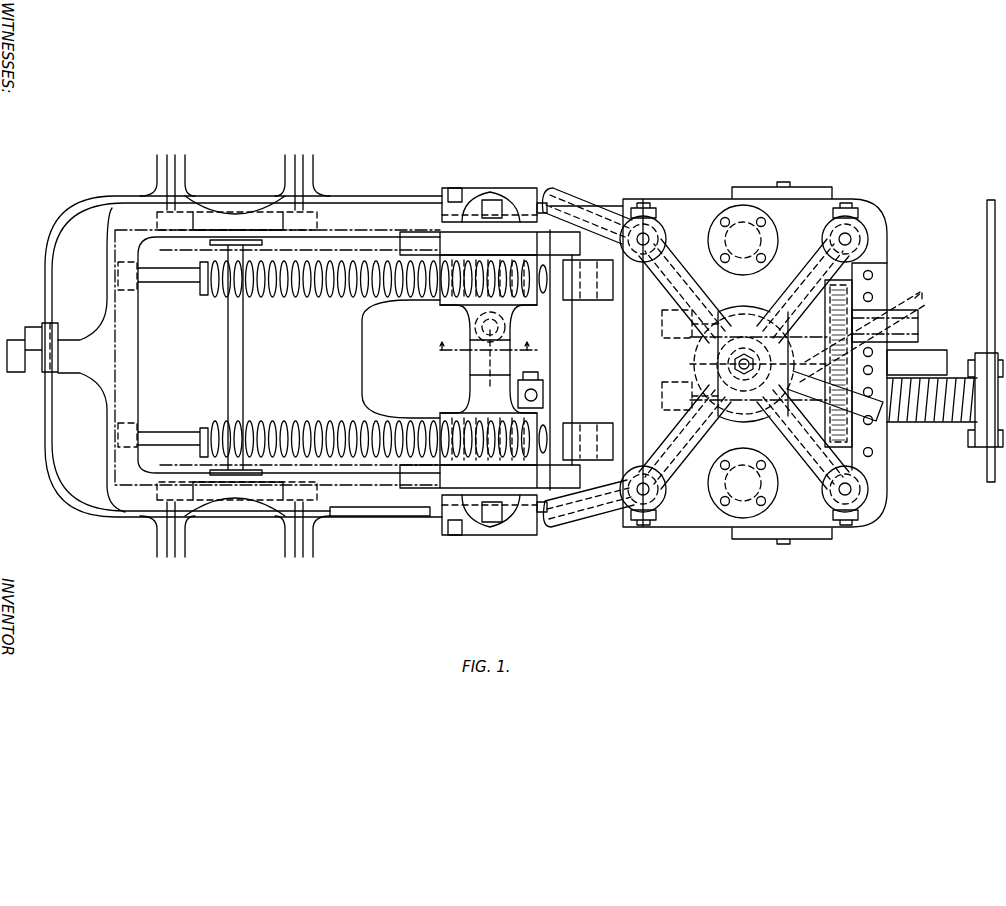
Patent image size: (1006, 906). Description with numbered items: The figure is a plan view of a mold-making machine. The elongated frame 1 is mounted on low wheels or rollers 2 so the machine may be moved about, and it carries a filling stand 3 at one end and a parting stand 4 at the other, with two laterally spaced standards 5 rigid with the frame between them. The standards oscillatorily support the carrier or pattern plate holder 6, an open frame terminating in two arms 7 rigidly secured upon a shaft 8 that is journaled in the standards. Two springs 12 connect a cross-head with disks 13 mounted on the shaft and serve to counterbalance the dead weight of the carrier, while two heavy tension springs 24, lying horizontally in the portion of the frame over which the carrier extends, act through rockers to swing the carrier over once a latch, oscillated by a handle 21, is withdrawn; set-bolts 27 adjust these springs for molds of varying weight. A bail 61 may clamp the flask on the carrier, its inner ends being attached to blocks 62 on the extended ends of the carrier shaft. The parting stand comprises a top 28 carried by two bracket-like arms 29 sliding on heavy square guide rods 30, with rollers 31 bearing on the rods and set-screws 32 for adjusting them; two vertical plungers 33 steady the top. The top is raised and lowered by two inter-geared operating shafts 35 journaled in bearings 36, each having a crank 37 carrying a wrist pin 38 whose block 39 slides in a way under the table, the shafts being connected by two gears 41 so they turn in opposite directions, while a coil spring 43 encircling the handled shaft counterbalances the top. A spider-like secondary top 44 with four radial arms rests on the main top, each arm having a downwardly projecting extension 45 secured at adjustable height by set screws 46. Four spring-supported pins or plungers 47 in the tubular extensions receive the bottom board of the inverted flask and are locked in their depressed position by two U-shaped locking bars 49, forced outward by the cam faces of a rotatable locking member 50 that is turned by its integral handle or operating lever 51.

The frame 1 is at (413, 238).
The wheels or rollers 2 is at (192, 212).
The filling stand 3 is at (218, 243).
The parting stand 4 is at (889, 359).
The standards 5 is at (465, 245).
The carrier or pattern plate holder 6 is at (332, 210).
The arms 7 is at (450, 253).
The shaft 8 is at (473, 360).
The springs 12 is at (473, 327).
The disks 13 is at (453, 298).
The handle 21 is at (395, 507).
The tension springs 24 is at (297, 300).
The set-bolts 27 is at (120, 287).
The top 28 is at (798, 230).
The bracket-like arms 29 is at (587, 200).
The guide rods 30 is at (492, 200).
The rollers 31 is at (522, 207).
The set-screws 32 is at (543, 210).
The vertical plungers 33 is at (743, 240).
The operating shafts 35 is at (893, 312).
The bearings 36 is at (855, 305).
The crank 37 is at (685, 367).
The wrist pin 38 is at (662, 322).
The block 39 is at (662, 350).
The gears 41 is at (874, 327).
The coil spring 43 is at (950, 418).
The secondary top 44 is at (790, 432).
The downwardly projecting extension 45 is at (847, 240).
The set screws 46 is at (847, 208).
The pins or plungers 47 is at (660, 202).
The locking bars 49 is at (787, 307).
The locking member 50 is at (717, 361).
The handle or operating lever 51 is at (860, 373).
The bail 61 is at (100, 513).
The blocks 62 is at (457, 192).